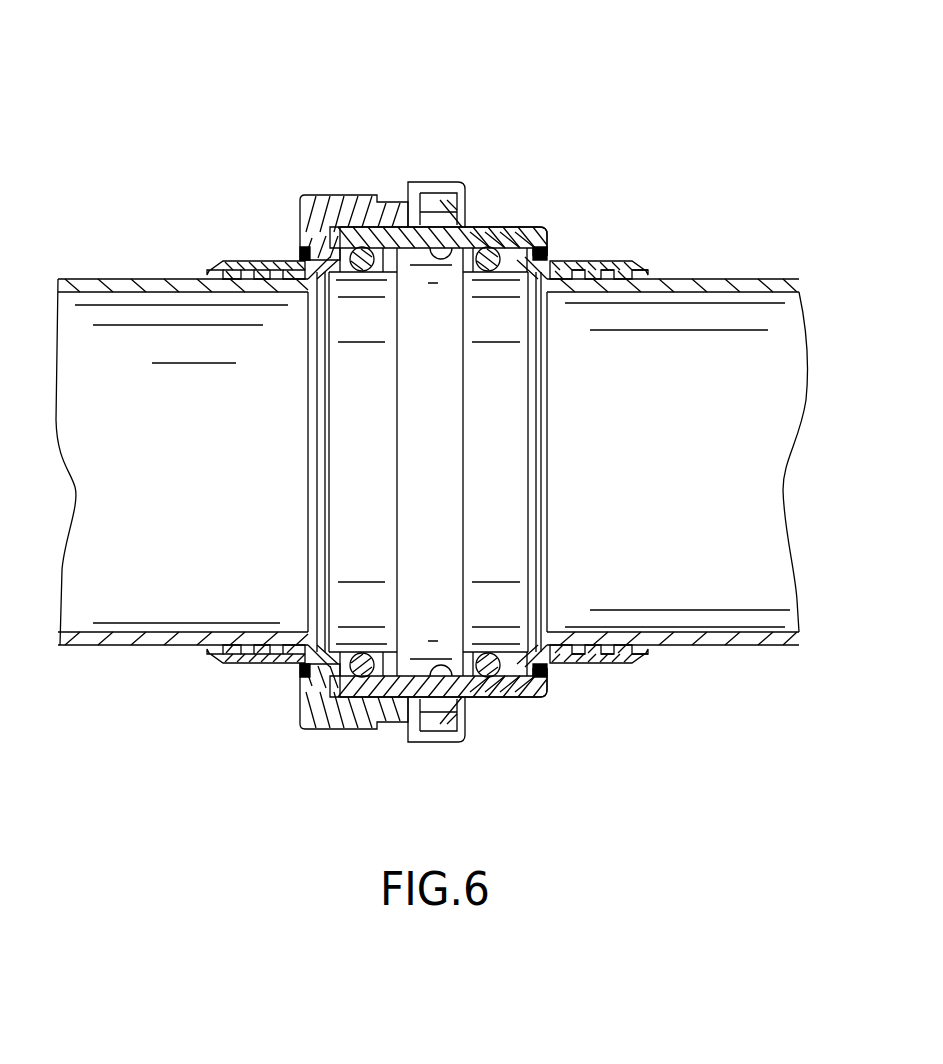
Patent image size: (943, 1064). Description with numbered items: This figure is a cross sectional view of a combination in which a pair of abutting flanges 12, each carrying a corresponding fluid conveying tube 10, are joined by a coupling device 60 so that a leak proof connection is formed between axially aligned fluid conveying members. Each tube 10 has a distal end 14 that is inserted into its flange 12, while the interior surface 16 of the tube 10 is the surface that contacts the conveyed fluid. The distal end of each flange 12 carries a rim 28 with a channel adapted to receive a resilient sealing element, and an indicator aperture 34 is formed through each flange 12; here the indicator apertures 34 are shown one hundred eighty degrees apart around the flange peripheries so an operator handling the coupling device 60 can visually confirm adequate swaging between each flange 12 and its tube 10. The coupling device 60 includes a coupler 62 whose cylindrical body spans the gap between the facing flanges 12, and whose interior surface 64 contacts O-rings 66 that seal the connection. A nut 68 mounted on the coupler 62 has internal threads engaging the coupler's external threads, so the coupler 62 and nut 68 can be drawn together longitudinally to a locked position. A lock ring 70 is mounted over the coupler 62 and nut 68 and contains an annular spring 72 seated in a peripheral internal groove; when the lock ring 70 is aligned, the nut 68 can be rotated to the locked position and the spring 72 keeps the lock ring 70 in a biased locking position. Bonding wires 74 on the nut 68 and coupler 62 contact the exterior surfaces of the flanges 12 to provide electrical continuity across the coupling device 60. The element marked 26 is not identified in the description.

The tube 10 is at (90, 257).
The flange 12 is at (444, 435).
The distal end 14 is at (315, 486).
The interior surface 16 is at (168, 455).
The clamp ring 26 is at (234, 262).
The rim 28 is at (355, 274).
The indicator aperture 34 is at (262, 270).
The coupling device 60 is at (423, 426).
The coupler 62 is at (533, 230).
The interior surface 64 is at (465, 246).
The O-rings 66 is at (368, 248).
The nut 68 is at (328, 195).
The lock ring 70 is at (437, 182).
The annular spring 72 is at (449, 210).
The bonding wires 74 is at (304, 246).